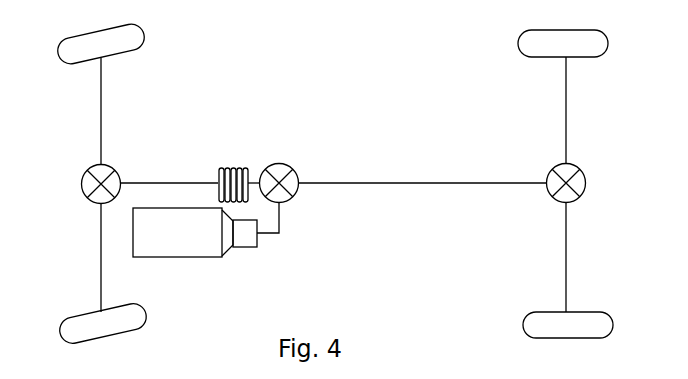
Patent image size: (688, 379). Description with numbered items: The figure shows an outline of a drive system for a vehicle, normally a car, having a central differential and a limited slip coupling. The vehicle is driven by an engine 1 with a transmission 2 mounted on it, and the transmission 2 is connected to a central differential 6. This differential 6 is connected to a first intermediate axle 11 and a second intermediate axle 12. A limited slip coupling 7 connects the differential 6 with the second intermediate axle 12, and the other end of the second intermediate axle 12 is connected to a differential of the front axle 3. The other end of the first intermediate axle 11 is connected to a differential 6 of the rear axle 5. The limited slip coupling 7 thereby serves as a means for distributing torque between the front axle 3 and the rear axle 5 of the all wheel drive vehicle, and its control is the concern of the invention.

The engine 1 is at (175, 240).
The transmission 2 is at (247, 243).
The front axle 3 is at (101, 108).
The rear axle 5 is at (565, 100).
The differential 6 is at (120, 180).
The limited slip coupling 7 is at (230, 165).
The first intermediate axle 11 is at (408, 182).
The second intermediate axle 12 is at (180, 183).